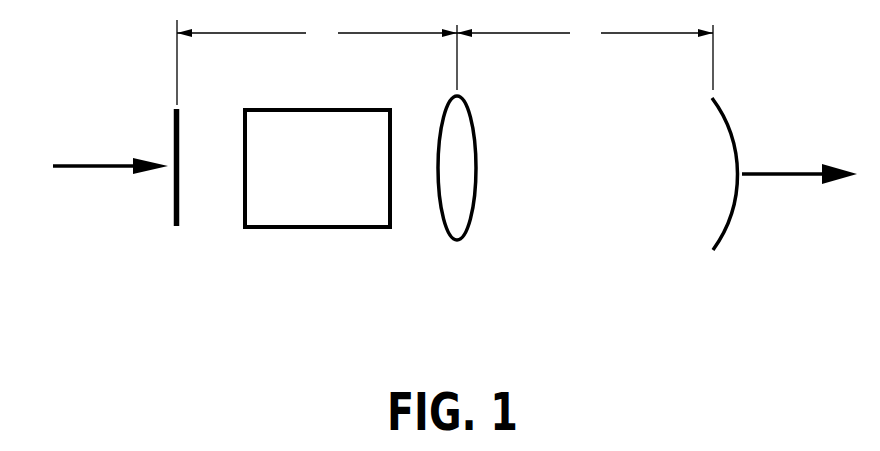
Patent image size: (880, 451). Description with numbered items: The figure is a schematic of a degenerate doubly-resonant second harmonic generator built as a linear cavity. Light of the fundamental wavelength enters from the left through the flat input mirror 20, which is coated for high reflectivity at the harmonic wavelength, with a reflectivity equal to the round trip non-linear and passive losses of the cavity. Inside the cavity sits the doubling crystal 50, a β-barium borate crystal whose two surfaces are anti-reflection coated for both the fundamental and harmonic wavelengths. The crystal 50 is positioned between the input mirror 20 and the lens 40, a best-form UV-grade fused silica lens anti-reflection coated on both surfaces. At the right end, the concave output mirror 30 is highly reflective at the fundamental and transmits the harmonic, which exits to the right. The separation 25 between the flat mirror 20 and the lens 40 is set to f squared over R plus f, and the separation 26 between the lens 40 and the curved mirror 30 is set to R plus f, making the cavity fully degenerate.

The input mirror 20 is at (173, 228).
The doubling crystal 50 is at (308, 227).
The lens 40 is at (457, 240).
The output mirror 30 is at (717, 240).
The separation between the flat mirror and the lens 25 is at (317, 35).
The separation between the lens and the curved mirror 26 is at (585, 35).